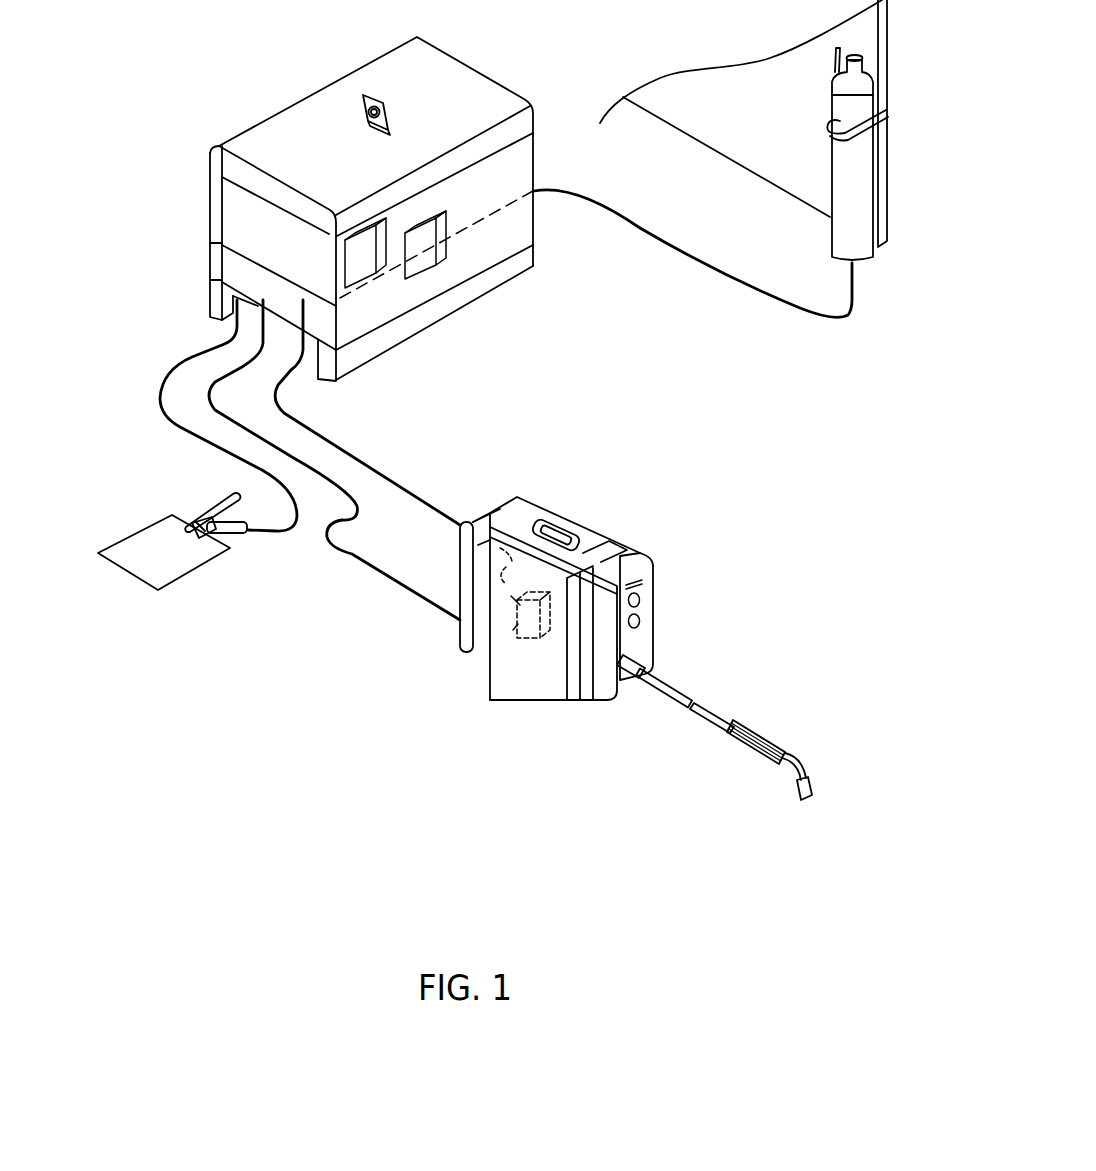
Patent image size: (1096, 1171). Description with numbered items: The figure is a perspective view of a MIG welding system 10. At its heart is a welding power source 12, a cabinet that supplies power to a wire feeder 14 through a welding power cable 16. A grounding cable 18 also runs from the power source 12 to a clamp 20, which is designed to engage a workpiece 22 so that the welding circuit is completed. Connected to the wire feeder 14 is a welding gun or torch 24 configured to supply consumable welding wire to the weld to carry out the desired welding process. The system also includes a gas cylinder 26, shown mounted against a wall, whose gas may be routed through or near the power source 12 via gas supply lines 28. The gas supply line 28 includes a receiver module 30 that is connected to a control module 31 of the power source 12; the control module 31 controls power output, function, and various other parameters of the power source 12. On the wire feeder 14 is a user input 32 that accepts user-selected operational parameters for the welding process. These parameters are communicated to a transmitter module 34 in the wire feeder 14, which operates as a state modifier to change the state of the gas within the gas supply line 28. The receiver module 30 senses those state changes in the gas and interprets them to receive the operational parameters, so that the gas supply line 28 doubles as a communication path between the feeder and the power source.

The MIG welding system 10 is at (51, 98).
The welding power source 12 is at (318, 86).
The wire feeder 14 is at (550, 682).
The welding power cable 16 is at (210, 395).
The grounding cable 18 is at (190, 363).
The clamp 20 is at (233, 533).
The workpiece 22 is at (127, 573).
The welding gun or torch 24 is at (768, 731).
The gas cylinder 26 is at (838, 116).
The gas supply line 28 is at (837, 327).
The receiver module 30 is at (425, 245).
The control module 31 is at (365, 253).
The user input 32 is at (657, 600).
The transmitter module 34 is at (523, 640).